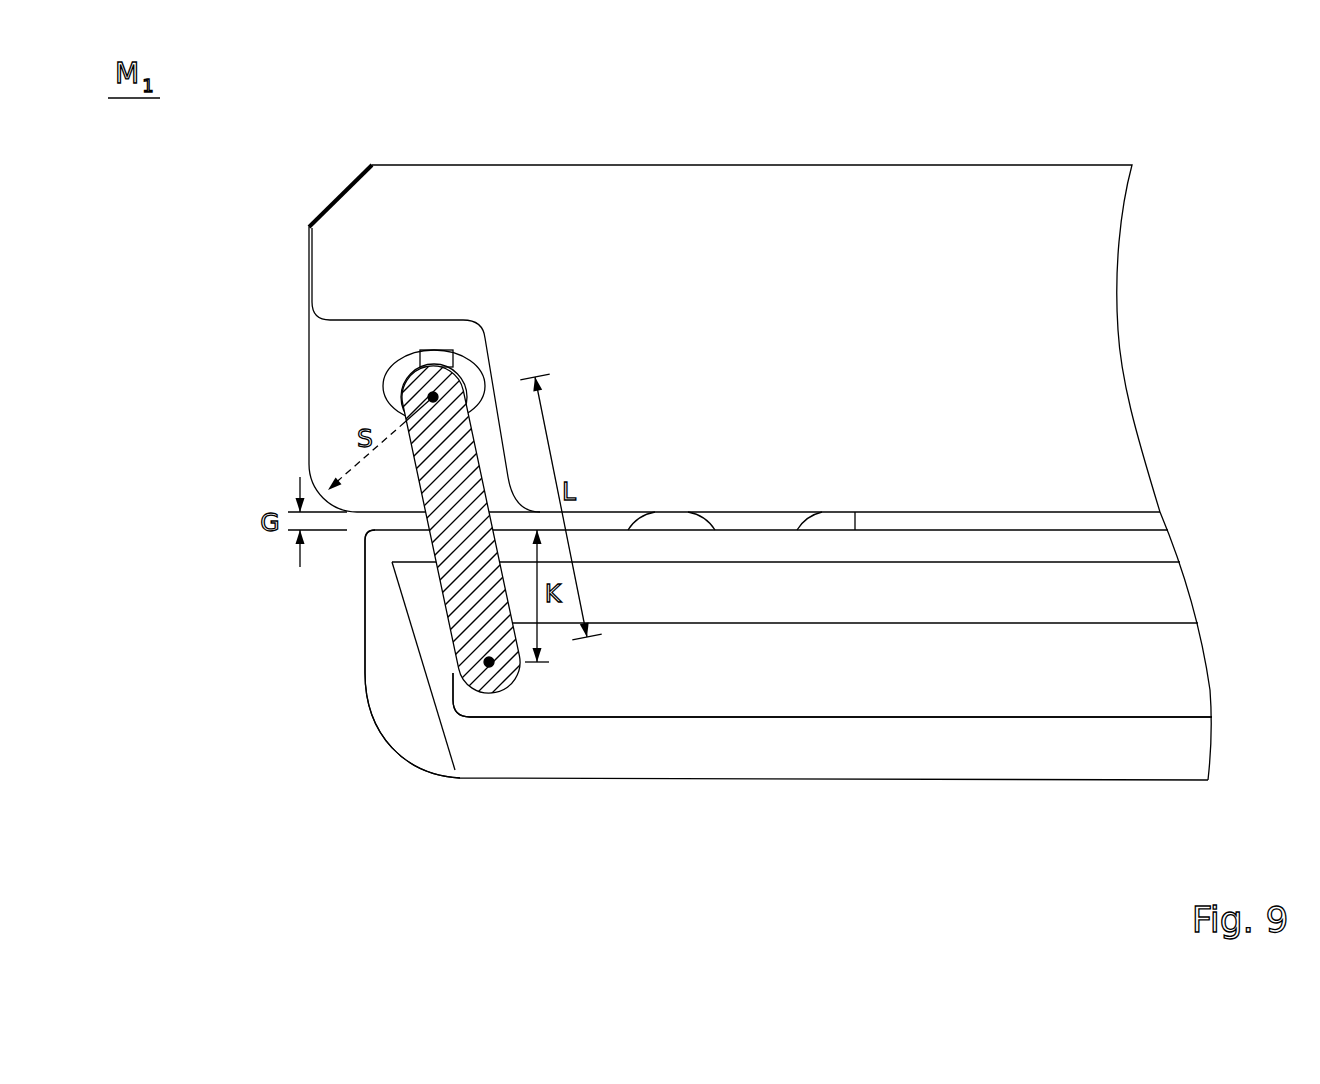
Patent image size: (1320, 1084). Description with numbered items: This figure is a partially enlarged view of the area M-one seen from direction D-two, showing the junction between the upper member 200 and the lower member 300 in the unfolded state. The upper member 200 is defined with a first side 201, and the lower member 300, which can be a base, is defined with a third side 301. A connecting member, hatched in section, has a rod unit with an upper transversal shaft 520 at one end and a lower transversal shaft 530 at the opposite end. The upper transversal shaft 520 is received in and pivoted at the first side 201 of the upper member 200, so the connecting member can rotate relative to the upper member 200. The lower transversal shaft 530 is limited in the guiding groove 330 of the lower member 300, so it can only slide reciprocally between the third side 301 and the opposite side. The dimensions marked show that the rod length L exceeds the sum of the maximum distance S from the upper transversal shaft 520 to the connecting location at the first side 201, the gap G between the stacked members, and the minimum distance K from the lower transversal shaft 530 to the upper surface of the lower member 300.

The upper member 200 is at (751, 162).
The first side 201 is at (308, 384).
The lower member 300 is at (1073, 786).
The third side 301 is at (365, 632).
The guiding groove 330 is at (655, 690).
The upper transversal shaft 520 is at (432, 367).
The lower transversal shaft 530 is at (492, 677).